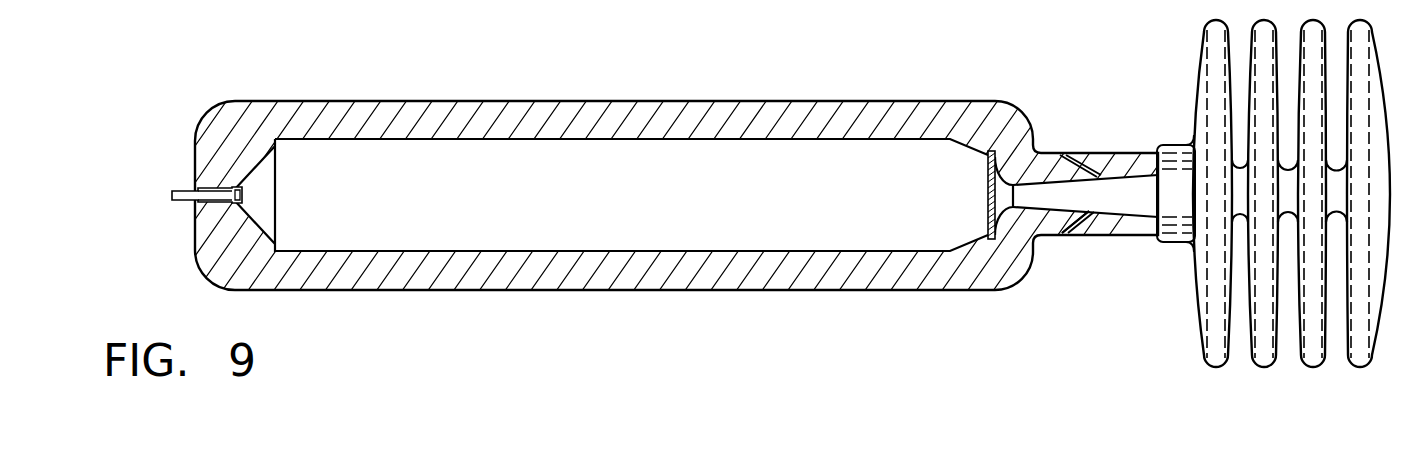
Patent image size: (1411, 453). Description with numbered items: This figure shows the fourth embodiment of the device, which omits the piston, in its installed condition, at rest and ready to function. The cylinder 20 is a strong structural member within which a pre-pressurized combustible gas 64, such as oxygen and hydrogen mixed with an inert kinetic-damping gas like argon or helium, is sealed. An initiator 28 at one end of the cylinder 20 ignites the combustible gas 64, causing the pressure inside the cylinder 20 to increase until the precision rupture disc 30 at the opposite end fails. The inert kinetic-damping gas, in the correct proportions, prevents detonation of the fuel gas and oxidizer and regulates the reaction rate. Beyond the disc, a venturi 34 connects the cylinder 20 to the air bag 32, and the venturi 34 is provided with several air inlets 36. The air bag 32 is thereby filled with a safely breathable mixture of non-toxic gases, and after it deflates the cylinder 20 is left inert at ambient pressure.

The cylinder 20 is at (543, 110).
The combustible gas 64 is at (368, 158).
The initiator 28 is at (240, 188).
The precision rupture disc 30 is at (989, 192).
The venturi 34 is at (1148, 192).
The air inlets 36 is at (1078, 233).
The air bag 32 is at (1198, 76).